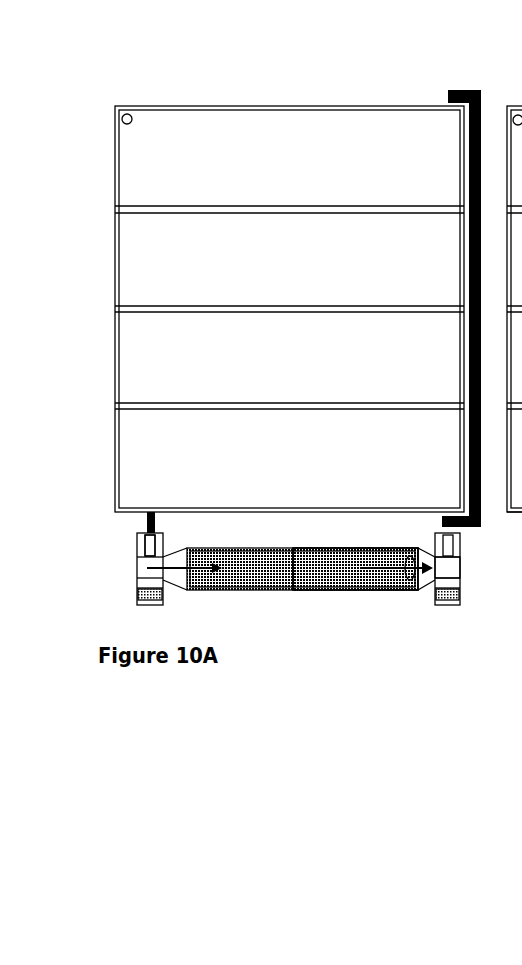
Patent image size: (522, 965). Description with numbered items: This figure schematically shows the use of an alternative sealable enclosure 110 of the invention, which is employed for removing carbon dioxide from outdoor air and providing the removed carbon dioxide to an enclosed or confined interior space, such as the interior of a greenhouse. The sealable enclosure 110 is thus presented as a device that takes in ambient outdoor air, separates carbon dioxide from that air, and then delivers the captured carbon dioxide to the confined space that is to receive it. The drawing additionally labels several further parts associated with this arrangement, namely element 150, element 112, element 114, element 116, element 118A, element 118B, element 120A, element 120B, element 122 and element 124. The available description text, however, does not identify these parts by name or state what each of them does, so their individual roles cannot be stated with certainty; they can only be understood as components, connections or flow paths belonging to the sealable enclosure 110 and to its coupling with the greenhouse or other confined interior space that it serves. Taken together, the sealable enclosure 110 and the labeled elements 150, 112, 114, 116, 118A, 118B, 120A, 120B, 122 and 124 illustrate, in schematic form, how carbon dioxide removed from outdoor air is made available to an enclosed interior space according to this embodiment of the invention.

The sealable enclosure 110 is at (273, 617).
The battery cell housing 150 is at (240, 106).
The coolant tube / heat exchanger 112 is at (244, 591).
The inlet connector 114 is at (135, 569).
The outlet connector 116 is at (442, 567).
The inlet port 118A is at (135, 545).
The inlet return port 118B is at (135, 590).
The outlet port 120A is at (470, 569).
The outlet return port 120B is at (437, 605).
The coolant channel 122 is at (330, 591).
The coolant flow 124 is at (355, 611).